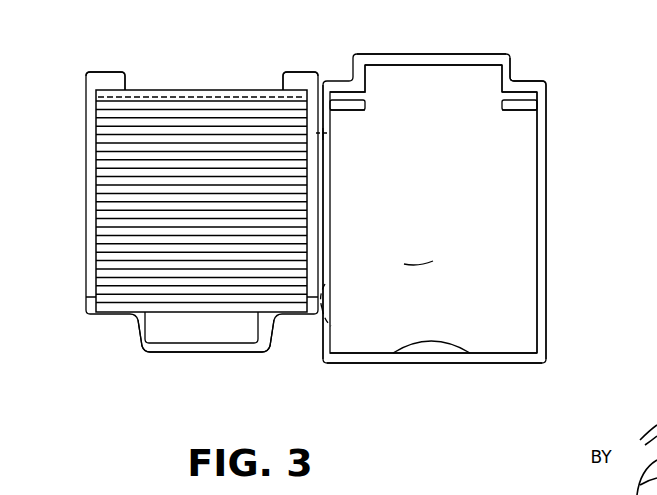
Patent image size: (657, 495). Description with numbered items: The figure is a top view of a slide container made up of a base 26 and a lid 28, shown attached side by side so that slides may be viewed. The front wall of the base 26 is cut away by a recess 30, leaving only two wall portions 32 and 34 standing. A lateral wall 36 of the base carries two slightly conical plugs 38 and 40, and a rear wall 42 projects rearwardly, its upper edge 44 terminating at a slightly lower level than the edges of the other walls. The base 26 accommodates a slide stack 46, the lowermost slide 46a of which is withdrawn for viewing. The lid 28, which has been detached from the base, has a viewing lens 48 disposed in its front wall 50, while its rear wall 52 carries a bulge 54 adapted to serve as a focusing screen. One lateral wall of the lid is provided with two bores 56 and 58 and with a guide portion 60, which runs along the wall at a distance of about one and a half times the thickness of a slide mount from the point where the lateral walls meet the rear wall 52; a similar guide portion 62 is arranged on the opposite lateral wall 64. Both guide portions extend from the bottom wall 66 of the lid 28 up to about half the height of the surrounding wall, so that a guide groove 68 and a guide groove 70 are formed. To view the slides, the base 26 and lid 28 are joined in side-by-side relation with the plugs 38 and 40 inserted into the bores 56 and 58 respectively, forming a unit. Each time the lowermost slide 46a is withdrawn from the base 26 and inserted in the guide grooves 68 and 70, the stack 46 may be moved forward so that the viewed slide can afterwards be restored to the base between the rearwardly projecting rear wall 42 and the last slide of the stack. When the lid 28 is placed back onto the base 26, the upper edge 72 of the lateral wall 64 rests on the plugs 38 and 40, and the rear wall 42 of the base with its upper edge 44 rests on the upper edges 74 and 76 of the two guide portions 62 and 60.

The base 26 is at (90, 328).
The lid 28 is at (556, 251).
The recess 30 is at (176, 76).
The wall portion 32 is at (283, 82).
The wall portion 34 is at (118, 78).
The lateral wall 36 is at (323, 265).
The plug 38 is at (332, 288).
The plug 40 is at (326, 130).
The rear wall 42 is at (220, 353).
The upper edge 44 is at (170, 345).
The slide stack 46 is at (146, 160).
The lowermost slide 46a is at (230, 88).
The viewing lens 48 is at (437, 347).
The front wall 50 is at (507, 357).
The rear wall 52 is at (517, 82).
The bulge 54 is at (441, 68).
The bore 56 is at (333, 321).
The bore 58 is at (324, 133).
The guide portion 60 is at (353, 110).
The guide portion 62 is at (508, 110).
The lateral wall 64 is at (540, 201).
The bottom wall 66 is at (417, 253).
The guide groove 68 is at (366, 93).
The guide groove 70 is at (492, 90).
The upper edge 72 is at (546, 328).
The upper edge 74 is at (527, 110).
The upper edge 76 is at (341, 104).